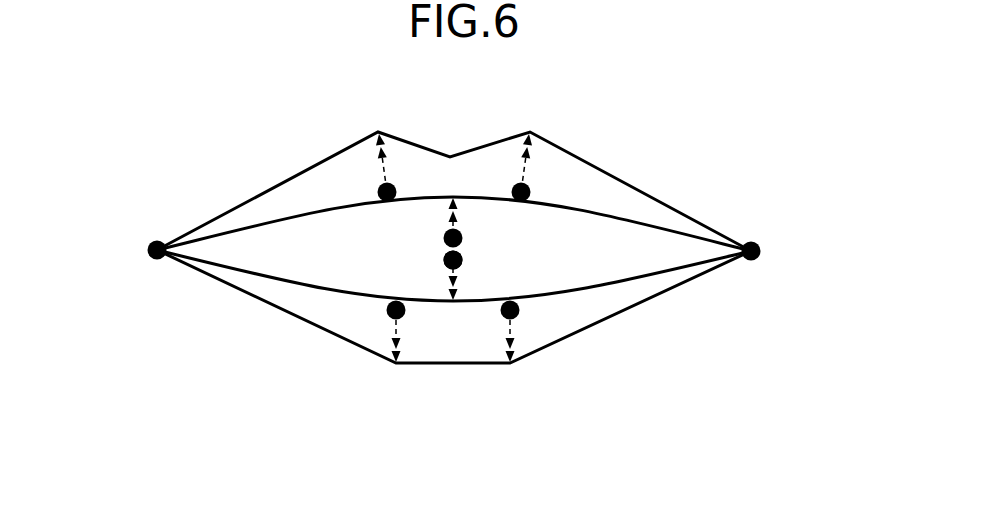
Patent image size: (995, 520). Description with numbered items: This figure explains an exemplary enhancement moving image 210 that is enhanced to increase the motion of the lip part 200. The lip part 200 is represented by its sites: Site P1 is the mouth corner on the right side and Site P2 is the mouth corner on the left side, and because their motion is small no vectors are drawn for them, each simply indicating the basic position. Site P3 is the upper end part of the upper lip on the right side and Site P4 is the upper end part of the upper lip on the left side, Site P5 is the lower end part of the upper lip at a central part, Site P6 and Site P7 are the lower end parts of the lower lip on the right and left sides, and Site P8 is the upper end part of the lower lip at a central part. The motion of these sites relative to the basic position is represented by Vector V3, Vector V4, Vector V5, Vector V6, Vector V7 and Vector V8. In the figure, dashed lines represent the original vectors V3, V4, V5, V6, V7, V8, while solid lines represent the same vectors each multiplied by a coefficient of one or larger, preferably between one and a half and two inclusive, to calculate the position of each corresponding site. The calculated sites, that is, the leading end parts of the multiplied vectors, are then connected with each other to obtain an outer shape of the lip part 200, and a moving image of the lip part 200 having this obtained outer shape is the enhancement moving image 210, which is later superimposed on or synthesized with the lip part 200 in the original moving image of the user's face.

The mouth corner on the right side P1 is at (147, 250).
The mouth corner on the left side P2 is at (761, 244).
The upper end part of the upper lip on the right side P3 is at (397, 188).
The upper end part of the upper lip on the left side P4 is at (514, 187).
The lower end part of the upper lip at a central part P5 is at (463, 232).
The lower end part of the lower lip on the right side P6 is at (405, 318).
The lower end part of the lower lip on the left side P7 is at (501, 318).
The upper end part of the lower lip at a central part P8 is at (448, 268).
The vector representing motion of Site P3 V3 is at (378, 155).
The vector representing motion of Site P4 V4 is at (529, 155).
The vector representing motion of Site P5 V5 is at (450, 213).
The vector representing motion of Site P6 V6 is at (392, 348).
The vector representing motion of Site P7 V7 is at (514, 348).
The vector representing motion of Site P8 V8 is at (457, 290).
The lip part 200 is at (766, 226).
The enhancement moving image 210 is at (732, 139).